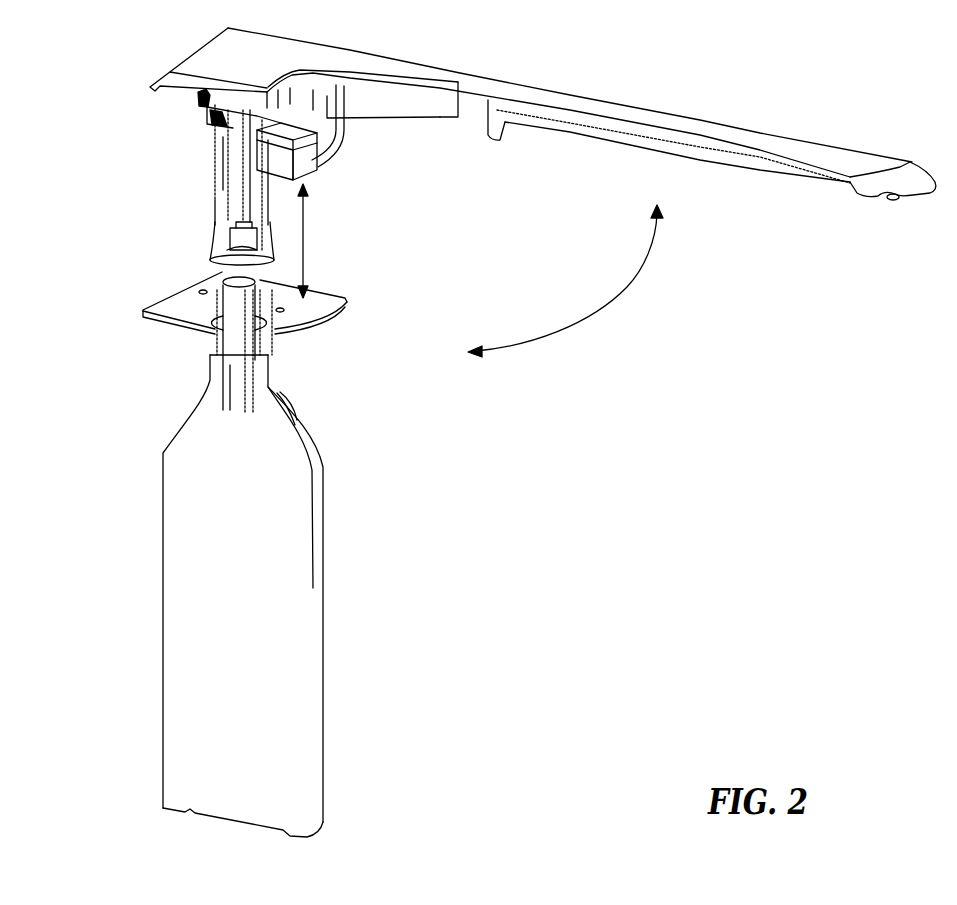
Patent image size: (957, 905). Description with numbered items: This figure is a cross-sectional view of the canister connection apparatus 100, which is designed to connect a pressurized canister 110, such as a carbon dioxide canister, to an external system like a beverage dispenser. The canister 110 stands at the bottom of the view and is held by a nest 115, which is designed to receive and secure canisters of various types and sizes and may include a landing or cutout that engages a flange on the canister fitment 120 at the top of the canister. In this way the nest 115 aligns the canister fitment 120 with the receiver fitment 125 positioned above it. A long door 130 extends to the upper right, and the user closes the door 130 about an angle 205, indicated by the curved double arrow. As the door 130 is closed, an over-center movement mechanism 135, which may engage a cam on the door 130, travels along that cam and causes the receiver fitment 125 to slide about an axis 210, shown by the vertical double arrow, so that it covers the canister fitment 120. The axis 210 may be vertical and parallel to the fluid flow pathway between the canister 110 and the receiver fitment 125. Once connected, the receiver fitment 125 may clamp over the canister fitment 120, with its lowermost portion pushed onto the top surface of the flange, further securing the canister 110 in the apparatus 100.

The canister connection apparatus 100 is at (918, 56).
The canister 110 is at (323, 588).
The nest 115 is at (315, 323).
The canister fitment 120 is at (224, 352).
The receiver fitment 125 is at (218, 191).
The door 130 is at (757, 170).
The over-center movement mechanism 135 is at (298, 165).
The angle 205 is at (565, 281).
The axis 210 is at (324, 241).